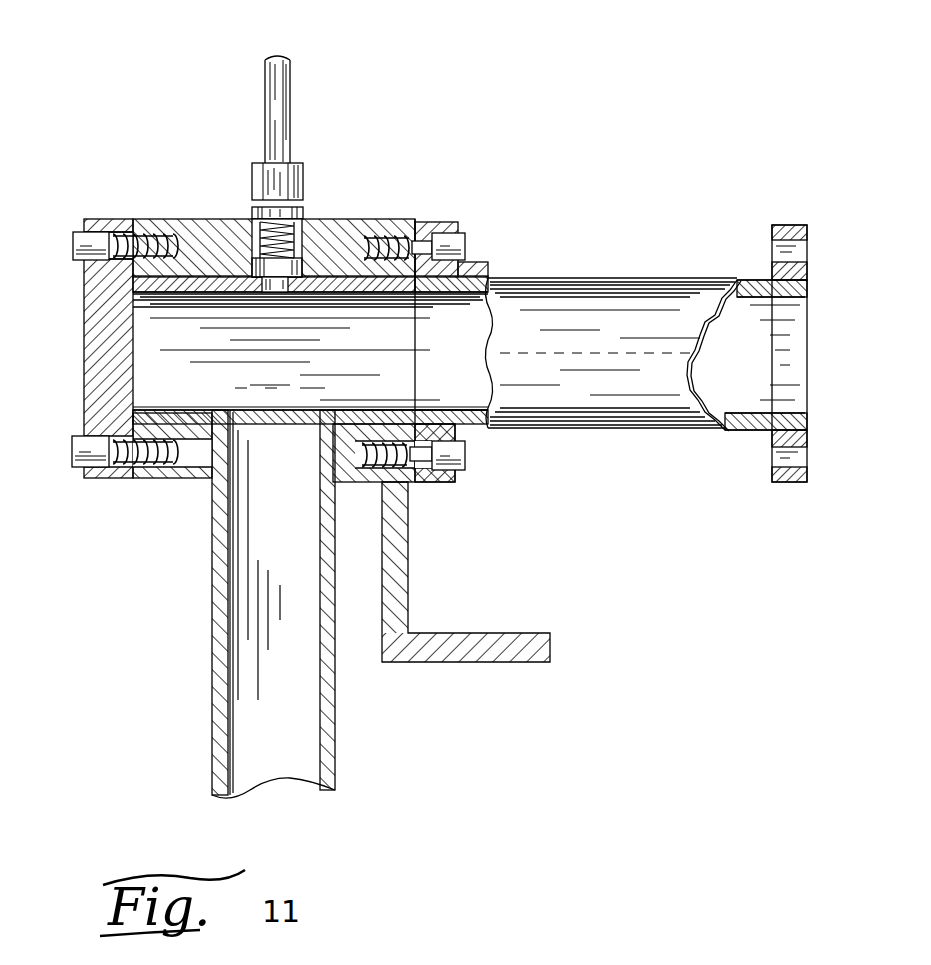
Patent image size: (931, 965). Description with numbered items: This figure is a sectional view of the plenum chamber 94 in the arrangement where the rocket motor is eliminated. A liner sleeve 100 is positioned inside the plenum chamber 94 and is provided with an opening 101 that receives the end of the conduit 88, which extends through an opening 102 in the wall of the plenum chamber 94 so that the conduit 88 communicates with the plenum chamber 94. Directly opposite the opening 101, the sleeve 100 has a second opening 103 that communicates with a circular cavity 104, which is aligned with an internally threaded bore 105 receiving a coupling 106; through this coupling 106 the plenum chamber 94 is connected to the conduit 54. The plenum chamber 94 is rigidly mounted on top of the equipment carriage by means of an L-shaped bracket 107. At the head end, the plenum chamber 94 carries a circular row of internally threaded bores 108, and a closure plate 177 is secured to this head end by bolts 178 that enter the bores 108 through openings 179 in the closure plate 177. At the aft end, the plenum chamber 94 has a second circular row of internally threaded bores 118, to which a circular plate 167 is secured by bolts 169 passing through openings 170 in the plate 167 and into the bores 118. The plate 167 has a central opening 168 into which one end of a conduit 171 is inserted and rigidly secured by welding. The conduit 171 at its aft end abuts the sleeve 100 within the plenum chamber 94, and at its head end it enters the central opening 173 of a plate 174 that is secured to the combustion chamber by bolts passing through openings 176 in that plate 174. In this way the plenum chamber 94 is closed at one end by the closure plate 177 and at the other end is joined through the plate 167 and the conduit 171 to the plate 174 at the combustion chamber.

The conduit 54 is at (291, 105).
The conduit 88 is at (212, 622).
The plenum chamber 94 is at (364, 200).
The liner sleeve 100 is at (234, 385).
The opening 101 is at (340, 420).
The opening 102 is at (352, 482).
The second opening 103 is at (280, 284).
The circular cavity 104 is at (272, 267).
The internally threaded bore 105 is at (262, 250).
The coupling 106 is at (303, 182).
The L-shaped bracket 107 is at (468, 637).
The internally threaded bores 108 is at (162, 236).
The internally threaded bores 118 is at (410, 200).
The circular plate 167 is at (428, 222).
The central opening 168 is at (448, 276).
The bolts 169 is at (458, 240).
The openings 170 is at (420, 484).
The conduit 171 is at (571, 278).
The central opening 173 is at (777, 272).
The plate 174 is at (787, 225).
The openings 176 is at (800, 252).
The closure plate 177 is at (84, 400).
The bolts 178 is at (73, 245).
The openings 179 is at (118, 219).